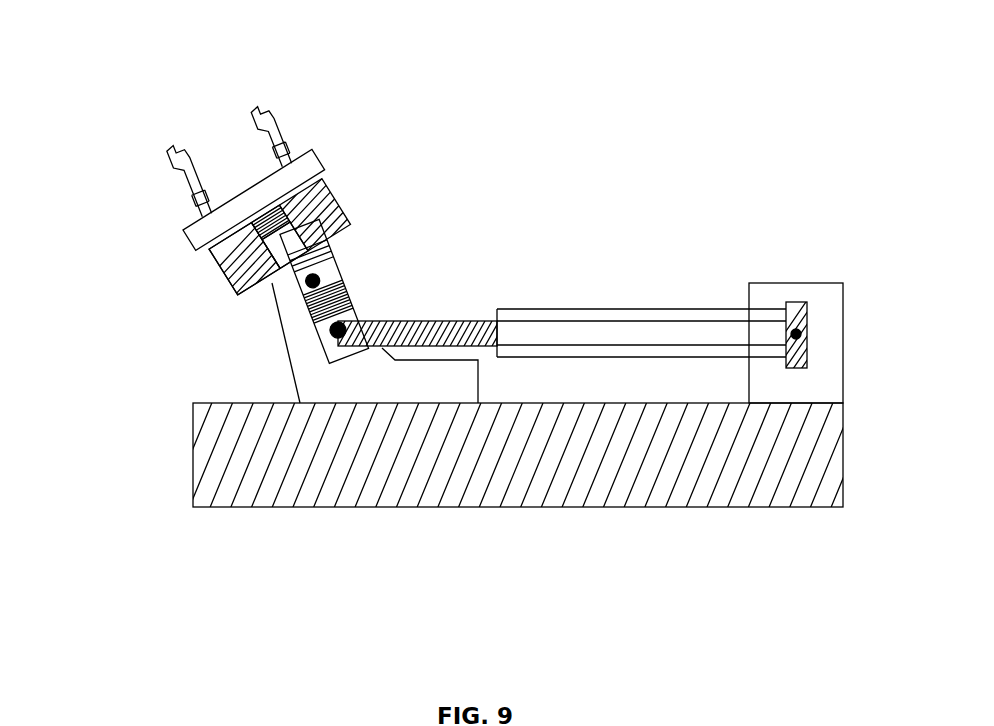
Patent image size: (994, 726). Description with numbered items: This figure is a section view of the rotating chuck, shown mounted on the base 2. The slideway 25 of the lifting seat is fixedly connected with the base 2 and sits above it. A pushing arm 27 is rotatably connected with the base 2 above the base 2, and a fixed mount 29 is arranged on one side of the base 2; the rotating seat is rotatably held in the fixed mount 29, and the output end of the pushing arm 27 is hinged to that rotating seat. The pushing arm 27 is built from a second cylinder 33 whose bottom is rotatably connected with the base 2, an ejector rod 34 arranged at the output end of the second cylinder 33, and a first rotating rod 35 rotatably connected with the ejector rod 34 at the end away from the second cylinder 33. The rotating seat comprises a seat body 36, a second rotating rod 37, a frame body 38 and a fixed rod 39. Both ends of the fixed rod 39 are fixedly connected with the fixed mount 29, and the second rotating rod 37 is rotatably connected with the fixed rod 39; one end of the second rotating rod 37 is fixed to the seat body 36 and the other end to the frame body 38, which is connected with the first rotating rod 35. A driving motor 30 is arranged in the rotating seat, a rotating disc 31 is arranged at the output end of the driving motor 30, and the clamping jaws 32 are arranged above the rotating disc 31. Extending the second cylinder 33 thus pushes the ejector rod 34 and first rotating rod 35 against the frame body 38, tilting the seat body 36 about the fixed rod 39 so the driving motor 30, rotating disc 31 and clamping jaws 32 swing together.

The base 2 is at (459, 470).
The slideway 25 is at (314, 327).
The pushing arm 27 is at (500, 310).
The fixed mount 29 is at (308, 362).
The driving motor 30 is at (278, 243).
The rotating disc 31 is at (200, 222).
The clamping jaws 32 is at (190, 182).
The second cylinder 33 is at (735, 330).
The ejector rod 34 is at (473, 318).
The first rotating rod 35 is at (362, 320).
The seat body 36 is at (242, 285).
The second rotating rod 37 is at (243, 297).
The frame body 38 is at (337, 318).
The fixed rod 39 is at (318, 268).